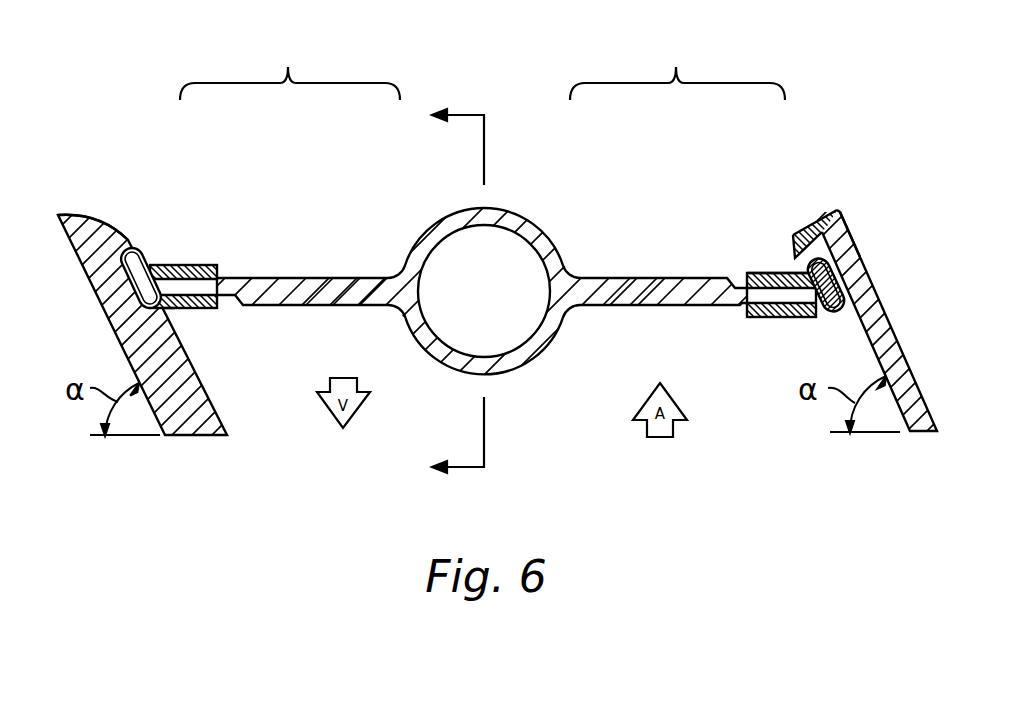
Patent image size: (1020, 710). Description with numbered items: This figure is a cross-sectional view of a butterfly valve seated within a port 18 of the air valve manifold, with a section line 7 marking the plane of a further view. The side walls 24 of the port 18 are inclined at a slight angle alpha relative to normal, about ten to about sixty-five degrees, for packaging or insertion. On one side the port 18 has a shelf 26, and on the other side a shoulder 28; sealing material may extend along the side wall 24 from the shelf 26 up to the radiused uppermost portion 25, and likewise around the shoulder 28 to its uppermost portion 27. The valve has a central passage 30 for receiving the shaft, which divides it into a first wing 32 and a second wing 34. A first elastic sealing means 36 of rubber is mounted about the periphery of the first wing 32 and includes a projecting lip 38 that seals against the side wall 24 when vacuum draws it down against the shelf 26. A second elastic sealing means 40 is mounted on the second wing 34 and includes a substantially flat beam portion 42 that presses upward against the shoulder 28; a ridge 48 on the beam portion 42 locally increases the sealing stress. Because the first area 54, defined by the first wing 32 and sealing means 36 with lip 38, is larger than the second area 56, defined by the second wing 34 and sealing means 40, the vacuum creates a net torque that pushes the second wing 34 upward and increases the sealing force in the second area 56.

The section line for FIG. 7 is at (449, 291).
The port 18 is at (575, 437).
The side wall 24 is at (205, 373).
The radiused uppermost portion 25 is at (70, 212).
The shelf 26 is at (172, 312).
The uppermost portion 27 is at (833, 210).
The shoulder 28 is at (812, 262).
The passage 30 is at (480, 242).
The first wing 32 is at (310, 278).
The second wing 34 is at (618, 278).
The first elastic sealing means 36 is at (196, 265).
The projecting lip 38 is at (140, 250).
The second elastic sealing means 40 is at (778, 317).
The beam portion 42 is at (765, 273).
The ridge 48 is at (850, 233).
The first area 54 is at (290, 68).
The second area 56 is at (677, 68).